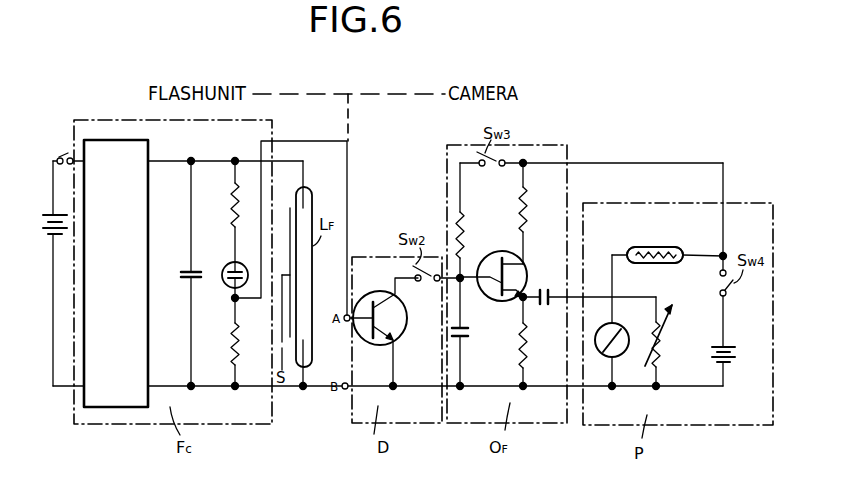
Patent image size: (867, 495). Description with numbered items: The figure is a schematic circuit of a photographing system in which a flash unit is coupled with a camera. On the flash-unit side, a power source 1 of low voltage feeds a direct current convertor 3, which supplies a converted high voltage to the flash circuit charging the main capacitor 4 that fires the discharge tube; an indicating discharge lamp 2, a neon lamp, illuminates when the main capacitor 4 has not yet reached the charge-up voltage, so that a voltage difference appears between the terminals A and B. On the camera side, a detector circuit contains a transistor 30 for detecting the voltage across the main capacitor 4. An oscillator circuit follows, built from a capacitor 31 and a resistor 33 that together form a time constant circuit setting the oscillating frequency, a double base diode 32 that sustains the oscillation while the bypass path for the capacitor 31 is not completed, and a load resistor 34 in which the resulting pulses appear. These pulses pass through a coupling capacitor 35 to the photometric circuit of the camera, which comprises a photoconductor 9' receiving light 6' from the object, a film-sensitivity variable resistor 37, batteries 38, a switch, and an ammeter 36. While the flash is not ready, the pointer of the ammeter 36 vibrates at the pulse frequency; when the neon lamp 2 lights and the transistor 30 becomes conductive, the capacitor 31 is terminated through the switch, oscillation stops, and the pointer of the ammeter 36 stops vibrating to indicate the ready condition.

The power source of low voltage 1 is at (46, 214).
The indicating discharge lamp 2 is at (238, 262).
The direct current convertor 3 is at (112, 140).
The main capacitor 4 is at (197, 267).
The transistor 30 is at (377, 291).
The capacitor 31 is at (460, 341).
The double base diode 32 is at (498, 250).
The resistor 33 is at (463, 228).
The load resistor 34 is at (515, 344).
The coupling capacitor 35 is at (551, 287).
The ammeter 36 is at (626, 331).
The film-sensitivity variable resistor 37 is at (664, 344).
The batteries 38 is at (728, 346).
The light from an object 6' is at (667, 242).
The photoconductor 9' is at (655, 242).